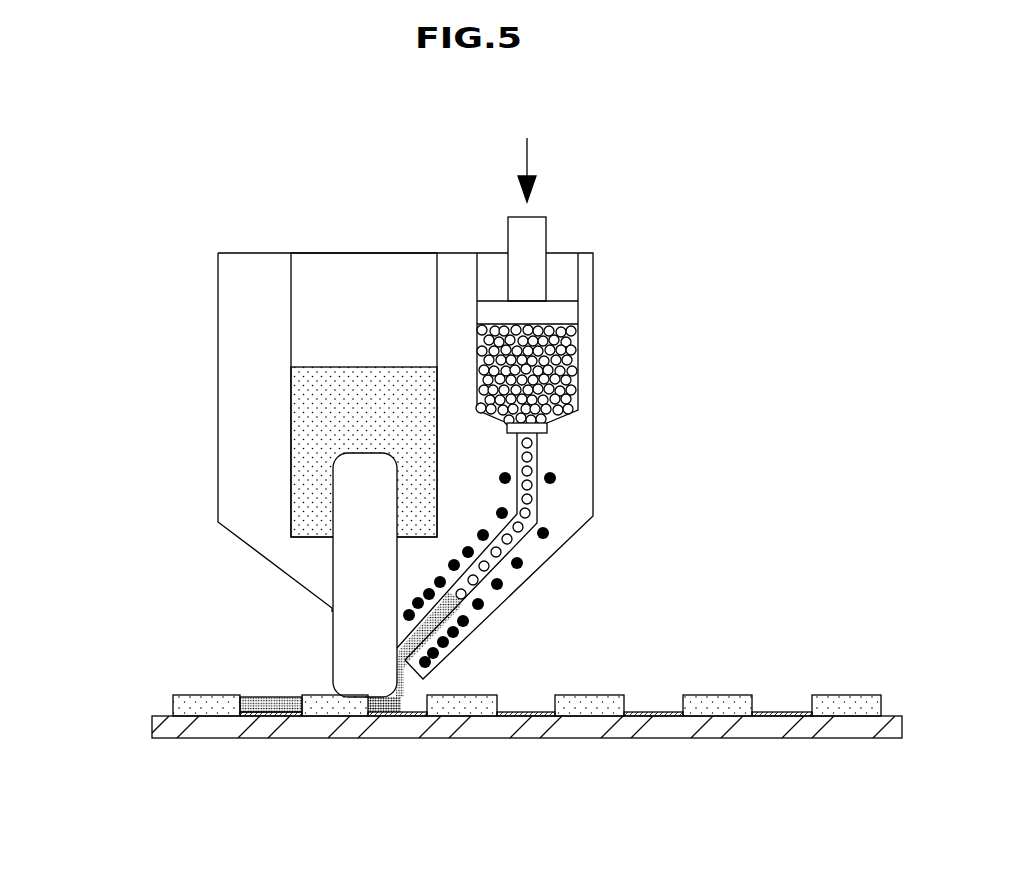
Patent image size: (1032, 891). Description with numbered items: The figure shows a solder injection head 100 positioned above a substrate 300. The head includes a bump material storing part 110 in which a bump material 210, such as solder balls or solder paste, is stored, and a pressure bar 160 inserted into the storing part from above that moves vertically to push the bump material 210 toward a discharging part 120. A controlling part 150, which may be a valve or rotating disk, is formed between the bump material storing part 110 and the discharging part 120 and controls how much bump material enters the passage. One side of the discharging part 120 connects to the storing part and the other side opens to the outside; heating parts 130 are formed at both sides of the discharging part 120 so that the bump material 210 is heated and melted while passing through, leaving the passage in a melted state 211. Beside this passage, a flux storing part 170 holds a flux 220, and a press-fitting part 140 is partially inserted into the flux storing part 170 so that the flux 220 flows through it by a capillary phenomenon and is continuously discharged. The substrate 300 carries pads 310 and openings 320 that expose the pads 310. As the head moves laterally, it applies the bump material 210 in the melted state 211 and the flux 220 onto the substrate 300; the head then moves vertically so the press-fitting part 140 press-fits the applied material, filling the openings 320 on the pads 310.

The solder injection head 100 is at (597, 193).
The bump material storing part 110 is at (563, 277).
The discharging part 120 is at (538, 499).
The heating part 130 is at (522, 562).
The press-fitting part 140 is at (353, 630).
The controlling part 150 is at (549, 428).
The pressure bar 160 is at (518, 237).
The flux storing part 170 is at (316, 306).
The bump material 210 is at (562, 367).
The melted state 211 is at (457, 608).
The flux 220 is at (316, 416).
The substrate 300 is at (152, 703).
The pad 310 is at (262, 713).
The opening 320 is at (410, 702).